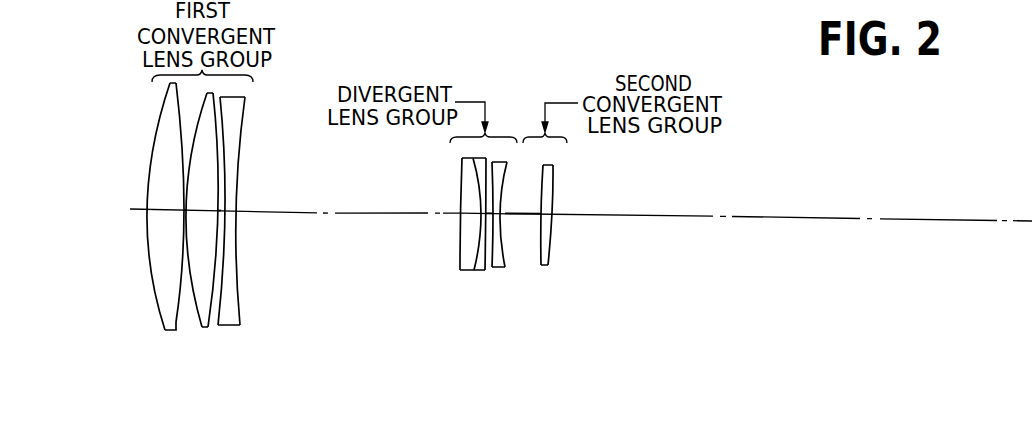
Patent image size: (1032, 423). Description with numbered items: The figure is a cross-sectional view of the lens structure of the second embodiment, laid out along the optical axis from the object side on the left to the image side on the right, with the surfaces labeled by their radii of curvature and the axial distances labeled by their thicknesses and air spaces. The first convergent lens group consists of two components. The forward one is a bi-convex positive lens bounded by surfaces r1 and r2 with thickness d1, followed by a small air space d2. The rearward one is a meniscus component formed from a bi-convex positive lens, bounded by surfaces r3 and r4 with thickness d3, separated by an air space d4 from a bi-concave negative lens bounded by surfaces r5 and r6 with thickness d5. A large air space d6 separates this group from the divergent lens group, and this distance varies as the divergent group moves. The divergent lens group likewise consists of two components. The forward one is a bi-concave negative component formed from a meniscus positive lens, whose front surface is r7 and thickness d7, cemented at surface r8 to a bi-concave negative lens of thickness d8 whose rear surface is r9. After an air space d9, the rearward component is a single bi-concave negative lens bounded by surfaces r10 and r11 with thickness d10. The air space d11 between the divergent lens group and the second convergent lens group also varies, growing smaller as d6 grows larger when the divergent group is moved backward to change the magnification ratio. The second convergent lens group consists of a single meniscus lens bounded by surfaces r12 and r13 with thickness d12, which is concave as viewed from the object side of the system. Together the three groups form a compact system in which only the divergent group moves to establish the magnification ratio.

The lens thickness d1 is at (163, 206).
The air space d2 is at (184, 205).
The lens thickness d3 is at (201, 210).
The air space d4 is at (221, 205).
The lens thickness d5 is at (232, 207).
The air space d6 is at (352, 203).
The lens thickness d7 is at (480, 212).
The lens thickness d8 is at (480, 215).
The air space d9 is at (489, 205).
The lens thickness d10 is at (500, 215).
The air space d11 is at (523, 203).
The lens thickness d12 is at (548, 210).
The radius of curvature r1 is at (164, 320).
The radius of curvature r2 is at (177, 321).
The radius of curvature r3 is at (201, 323).
The radius of curvature r4 is at (208, 322).
The radius of curvature r5 is at (220, 325).
The radius of curvature r6 is at (240, 325).
The radius of curvature r7 is at (461, 270).
The radius of curvature r8 is at (474, 270).
The radius of curvature r9 is at (484, 270).
The radius of curvature r10 is at (492, 268).
The radius of curvature r11 is at (505, 268).
The radius of curvature r12 is at (540, 266).
The radius of curvature r13 is at (548, 266).